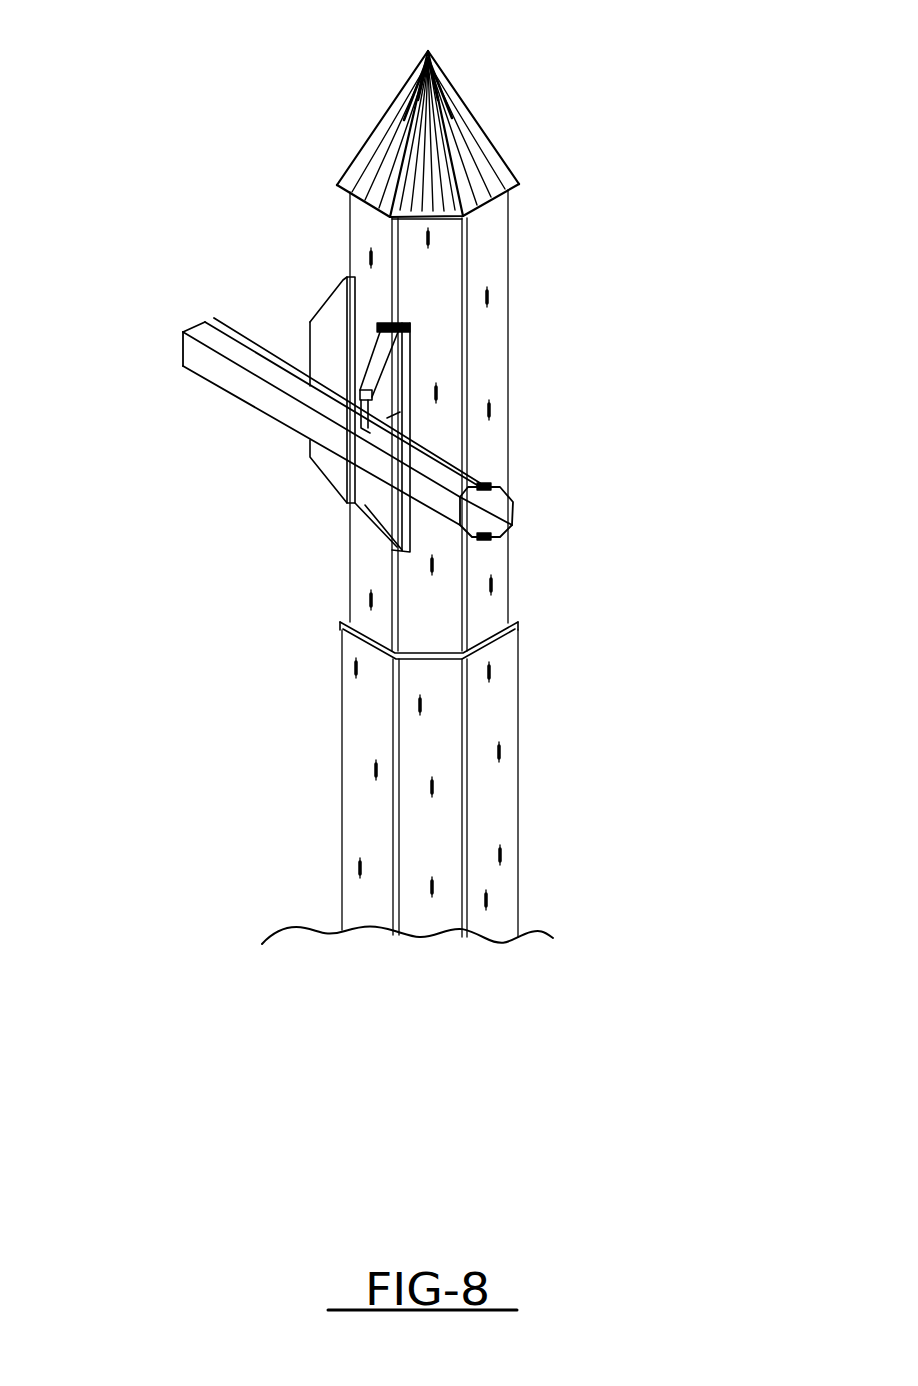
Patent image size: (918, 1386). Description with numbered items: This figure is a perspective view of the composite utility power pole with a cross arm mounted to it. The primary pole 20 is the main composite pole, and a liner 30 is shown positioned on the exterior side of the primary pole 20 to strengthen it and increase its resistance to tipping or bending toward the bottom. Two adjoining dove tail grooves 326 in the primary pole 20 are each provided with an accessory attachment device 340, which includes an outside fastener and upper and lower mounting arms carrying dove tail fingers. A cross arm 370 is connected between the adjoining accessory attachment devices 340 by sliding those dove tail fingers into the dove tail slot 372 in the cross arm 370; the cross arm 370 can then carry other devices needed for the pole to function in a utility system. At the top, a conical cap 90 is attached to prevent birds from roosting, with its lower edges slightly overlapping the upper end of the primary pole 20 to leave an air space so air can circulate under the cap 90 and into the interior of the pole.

The primary pole 20 is at (457, 327).
The liner 30 is at (363, 728).
The conical cap 90 is at (467, 118).
The dove tail groove 326 is at (350, 222).
The accessory attachment device 340 is at (325, 313).
The cross arm 370 is at (217, 373).
The dove tail slot 372 is at (488, 486).